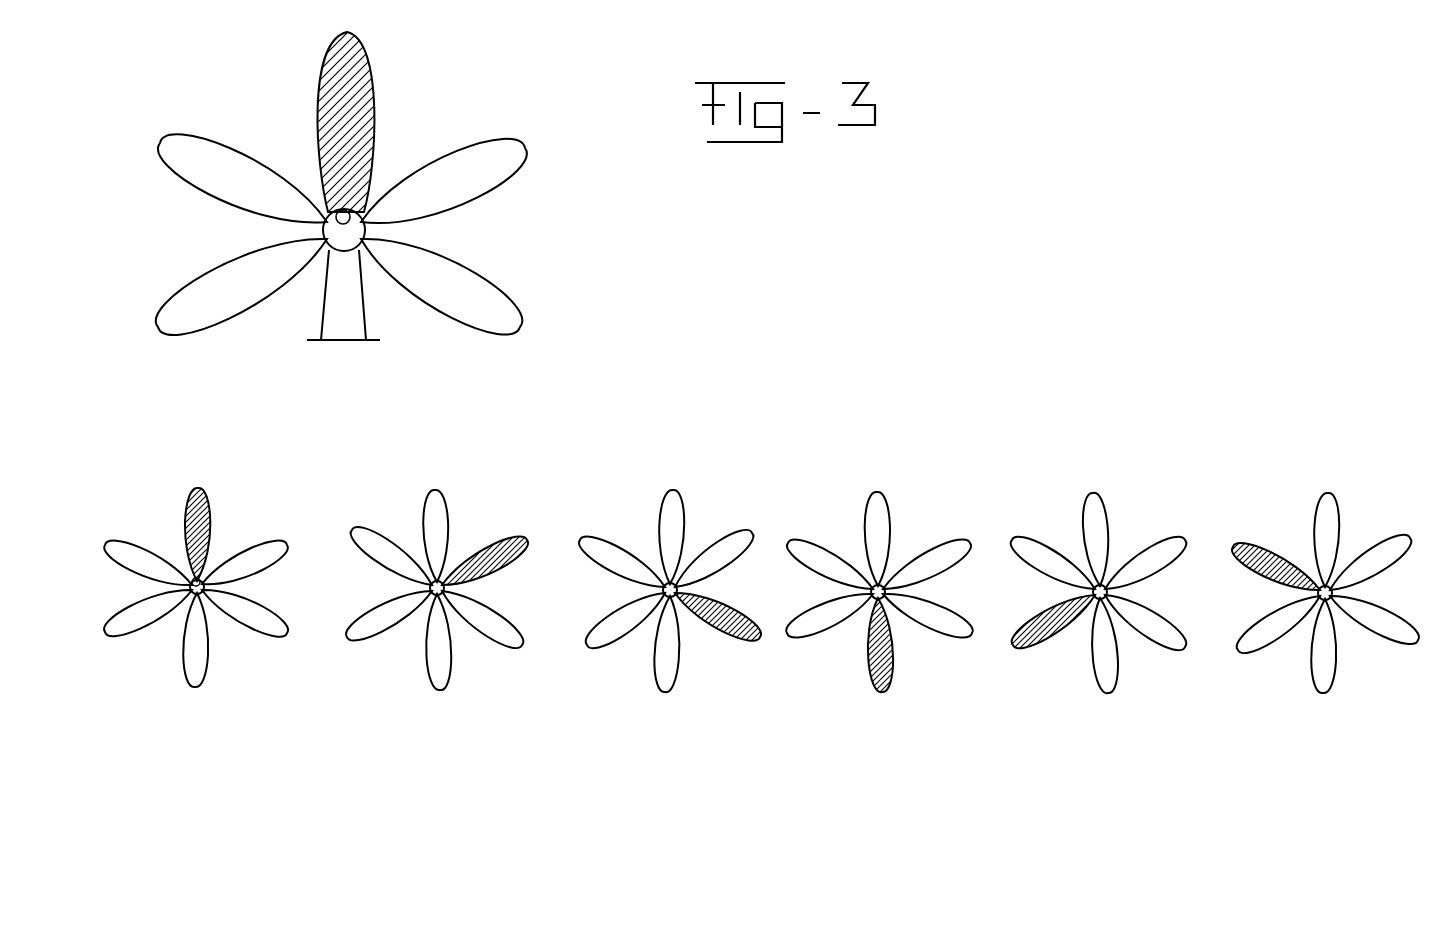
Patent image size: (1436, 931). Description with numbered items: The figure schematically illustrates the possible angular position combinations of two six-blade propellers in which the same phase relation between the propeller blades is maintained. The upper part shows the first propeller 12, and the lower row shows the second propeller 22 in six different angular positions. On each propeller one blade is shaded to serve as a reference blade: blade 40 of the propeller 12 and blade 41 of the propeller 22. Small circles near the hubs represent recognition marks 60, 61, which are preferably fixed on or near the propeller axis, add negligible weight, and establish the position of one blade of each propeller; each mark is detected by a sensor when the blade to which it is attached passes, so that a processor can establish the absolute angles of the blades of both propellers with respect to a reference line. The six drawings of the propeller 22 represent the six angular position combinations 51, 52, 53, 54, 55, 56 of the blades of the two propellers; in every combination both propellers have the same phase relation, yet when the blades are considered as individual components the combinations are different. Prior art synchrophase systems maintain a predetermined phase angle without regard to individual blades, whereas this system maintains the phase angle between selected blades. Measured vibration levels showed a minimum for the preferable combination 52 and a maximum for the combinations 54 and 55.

The propeller 12 is at (334, 215).
The propeller 22 is at (761, 644).
The blade 40 is at (363, 110).
The recognition mark 60 is at (350, 217).
The blade 41 is at (210, 530).
The recognition mark 61 is at (200, 582).
The blade combination 51 is at (196, 691).
The blade combination 52 is at (437, 666).
The blade combination 53 is at (670, 666).
The blade combination 54 is at (879, 667).
The blade combination 55 is at (1099, 667).
The blade combination 56 is at (1328, 667).